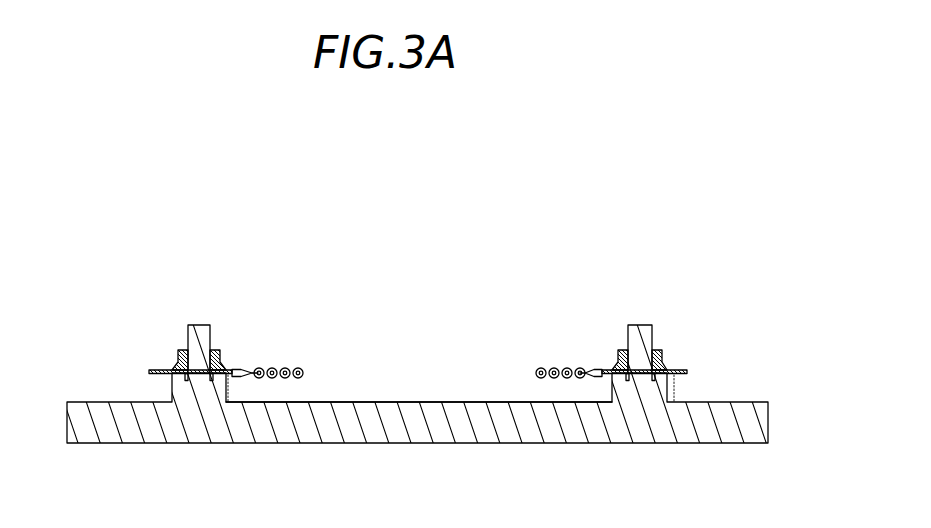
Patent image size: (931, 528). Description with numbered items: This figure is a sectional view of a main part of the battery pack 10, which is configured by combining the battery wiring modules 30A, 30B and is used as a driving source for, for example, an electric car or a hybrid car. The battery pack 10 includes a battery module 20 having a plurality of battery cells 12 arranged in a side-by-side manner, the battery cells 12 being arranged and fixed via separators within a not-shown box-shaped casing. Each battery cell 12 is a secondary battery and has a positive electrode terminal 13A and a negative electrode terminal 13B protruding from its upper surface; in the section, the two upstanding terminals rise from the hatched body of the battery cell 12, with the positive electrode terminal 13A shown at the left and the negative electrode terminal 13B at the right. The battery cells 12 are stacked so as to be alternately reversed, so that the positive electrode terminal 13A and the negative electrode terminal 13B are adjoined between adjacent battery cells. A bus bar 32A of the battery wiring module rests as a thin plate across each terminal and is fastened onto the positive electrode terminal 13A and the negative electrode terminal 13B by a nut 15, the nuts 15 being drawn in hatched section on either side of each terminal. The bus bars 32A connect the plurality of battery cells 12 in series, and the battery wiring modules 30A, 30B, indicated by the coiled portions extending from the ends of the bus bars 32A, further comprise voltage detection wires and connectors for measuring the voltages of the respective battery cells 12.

The battery pack 10 is at (710, 241).
The battery cell 12 is at (83, 401).
The positive electrode terminal 13A is at (200, 323).
The negative electrode terminal 13B is at (640, 323).
The nut 15 is at (180, 348).
The battery module 20 is at (395, 388).
The battery wiring module 30A is at (563, 364).
The battery wiring module 30B is at (264, 364).
The bus bar 32A is at (165, 376).